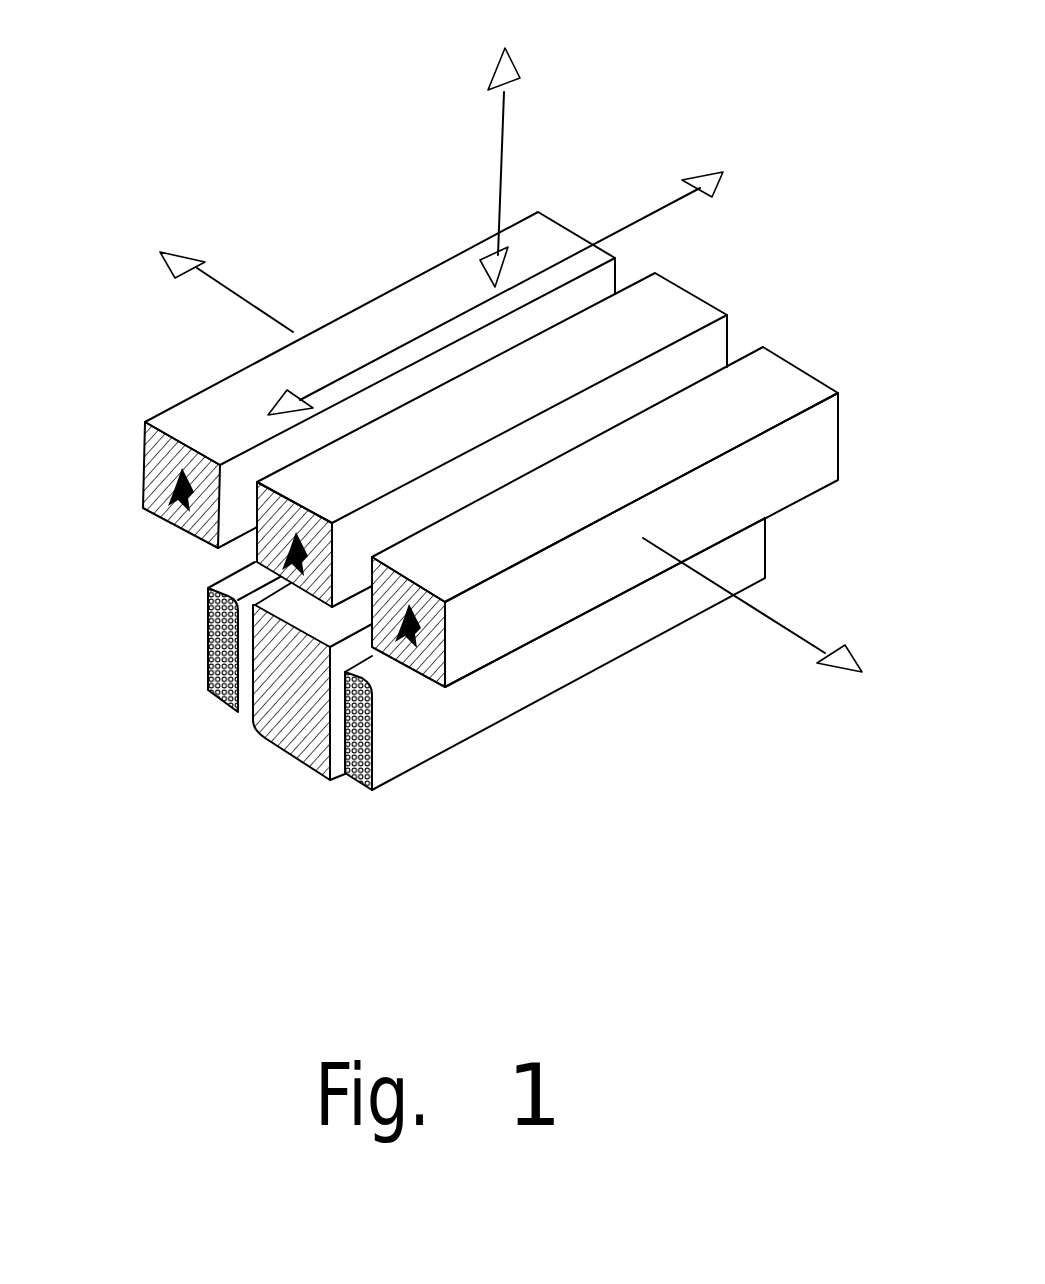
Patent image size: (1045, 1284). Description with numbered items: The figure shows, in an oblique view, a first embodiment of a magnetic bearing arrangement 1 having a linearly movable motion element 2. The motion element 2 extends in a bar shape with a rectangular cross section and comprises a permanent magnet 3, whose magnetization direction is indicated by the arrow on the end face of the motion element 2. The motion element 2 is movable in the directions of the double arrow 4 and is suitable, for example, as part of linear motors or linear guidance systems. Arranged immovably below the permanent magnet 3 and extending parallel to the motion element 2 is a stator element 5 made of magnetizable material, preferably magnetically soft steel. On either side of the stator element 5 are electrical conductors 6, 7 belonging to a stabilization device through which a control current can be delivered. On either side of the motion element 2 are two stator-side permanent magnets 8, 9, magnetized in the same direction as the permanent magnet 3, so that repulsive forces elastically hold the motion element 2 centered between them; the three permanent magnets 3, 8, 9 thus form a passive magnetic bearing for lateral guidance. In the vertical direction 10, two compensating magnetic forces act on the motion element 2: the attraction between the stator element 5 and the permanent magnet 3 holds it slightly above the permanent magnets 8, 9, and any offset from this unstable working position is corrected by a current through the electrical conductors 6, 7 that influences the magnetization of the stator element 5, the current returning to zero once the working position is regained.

The magnetic bearing arrangement 1 is at (805, 245).
The motion element 2 is at (752, 303).
The permanent magnet 3 is at (662, 313).
The double arrow 4 is at (638, 220).
The stator element 5 is at (285, 753).
The electrical conductor 6 is at (207, 688).
The electrical conductor 7 is at (420, 750).
The stator-side permanent magnet 8 is at (160, 520).
The stator-side permanent magnet 9 is at (783, 478).
The vertical direction 10 is at (503, 133).